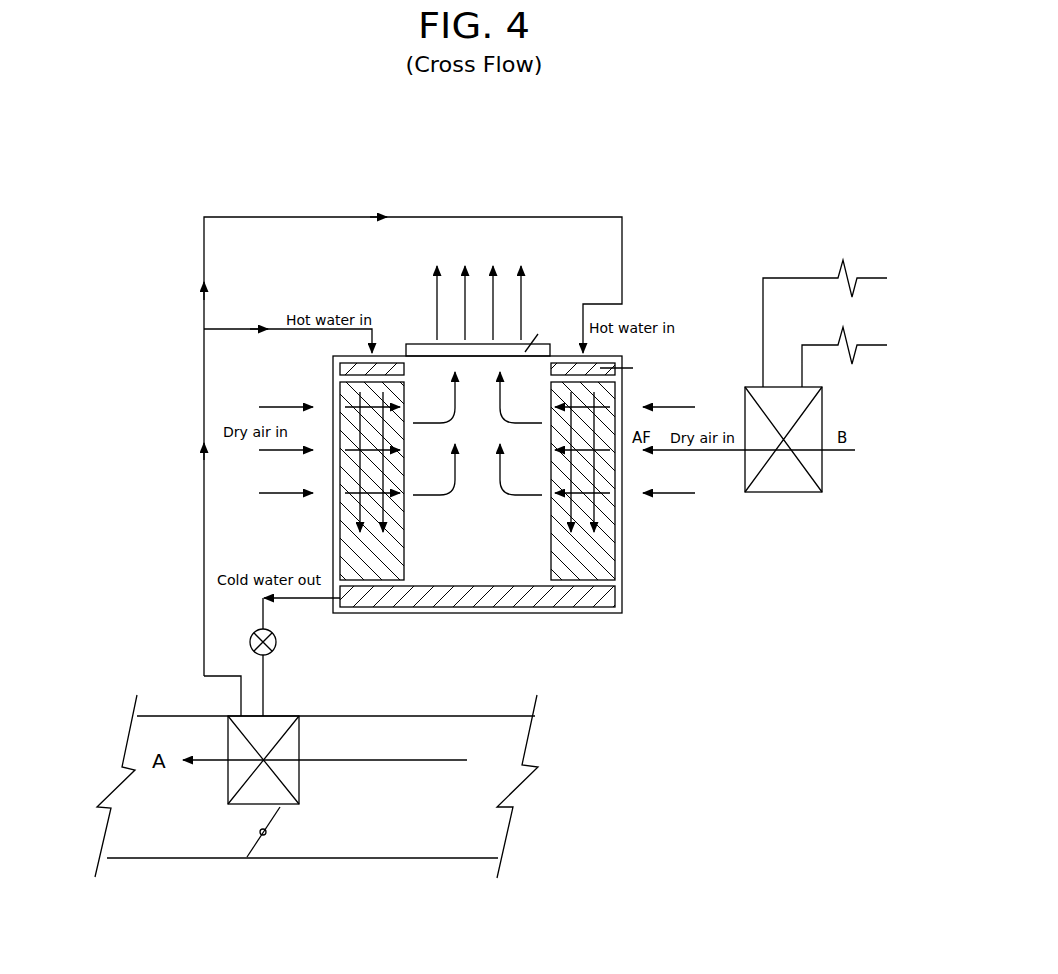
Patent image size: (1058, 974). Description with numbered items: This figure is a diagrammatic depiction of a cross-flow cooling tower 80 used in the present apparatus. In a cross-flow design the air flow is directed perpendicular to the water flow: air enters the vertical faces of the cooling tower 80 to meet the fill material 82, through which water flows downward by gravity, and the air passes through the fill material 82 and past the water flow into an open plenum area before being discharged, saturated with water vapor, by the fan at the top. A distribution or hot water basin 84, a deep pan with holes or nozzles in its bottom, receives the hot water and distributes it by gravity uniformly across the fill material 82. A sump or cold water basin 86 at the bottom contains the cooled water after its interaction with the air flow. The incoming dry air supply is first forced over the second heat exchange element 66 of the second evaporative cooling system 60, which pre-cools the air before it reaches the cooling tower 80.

The cross-flow cooling tower 80 is at (545, 402).
The second evaporative cooling system 60 is at (856, 261).
The distribution or hot water basin 84 is at (699, 364).
The fill material 82 is at (598, 573).
The sump or cold water basin 86 is at (605, 614).
The second heat exchange element 66 is at (800, 493).